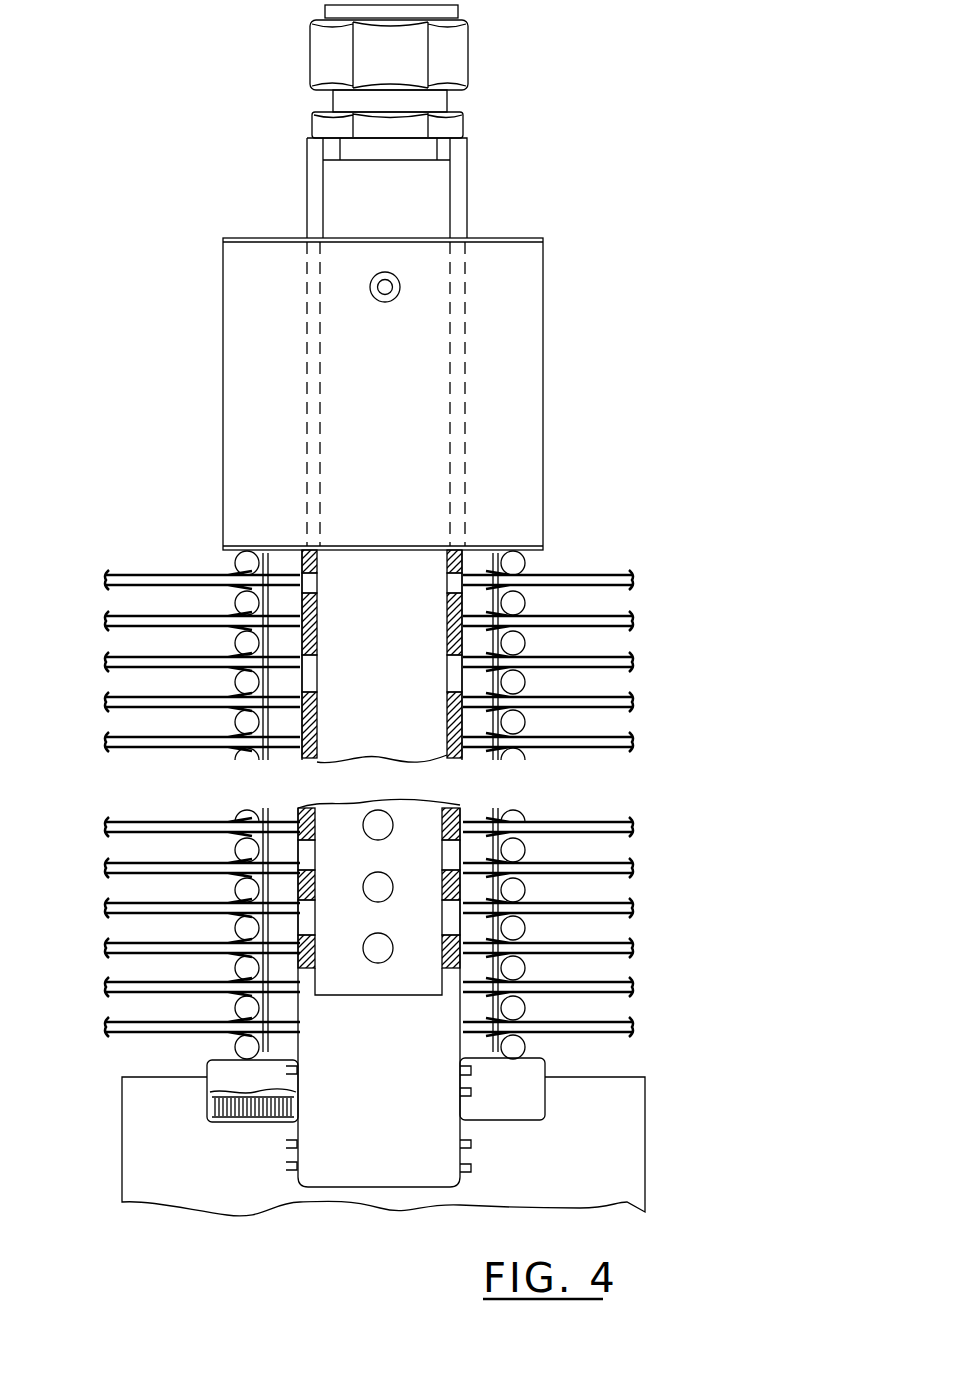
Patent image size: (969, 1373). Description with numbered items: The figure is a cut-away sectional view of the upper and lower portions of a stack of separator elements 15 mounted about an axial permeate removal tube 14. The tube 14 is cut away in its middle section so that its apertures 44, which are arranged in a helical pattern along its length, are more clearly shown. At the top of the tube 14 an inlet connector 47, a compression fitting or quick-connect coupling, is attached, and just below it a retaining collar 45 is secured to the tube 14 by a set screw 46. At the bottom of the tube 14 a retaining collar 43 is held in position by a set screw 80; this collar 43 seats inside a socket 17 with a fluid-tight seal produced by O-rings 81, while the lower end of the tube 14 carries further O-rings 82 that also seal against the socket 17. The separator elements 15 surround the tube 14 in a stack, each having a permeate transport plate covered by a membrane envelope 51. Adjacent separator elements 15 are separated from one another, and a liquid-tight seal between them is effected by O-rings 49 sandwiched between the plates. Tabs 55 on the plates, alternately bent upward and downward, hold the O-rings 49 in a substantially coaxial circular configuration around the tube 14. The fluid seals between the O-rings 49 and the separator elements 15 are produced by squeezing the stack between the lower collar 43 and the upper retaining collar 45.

The inlet connector 47 is at (515, 70).
The axial permeate removal tube 14 is at (463, 185).
The retaining collar 45 is at (527, 380).
The set screw 46 is at (400, 287).
The apertures 44 is at (447, 580).
The tabs 55 is at (318, 637).
The separator elements 15 is at (630, 703).
The O-rings 49 is at (243, 646).
The membrane envelope 51 is at (530, 937).
The socket 17 is at (138, 1140).
The set screw 80 is at (250, 1124).
The retaining collar 43 is at (530, 1115).
The O-rings 81 is at (472, 1092).
The O-rings 82 is at (472, 1168).